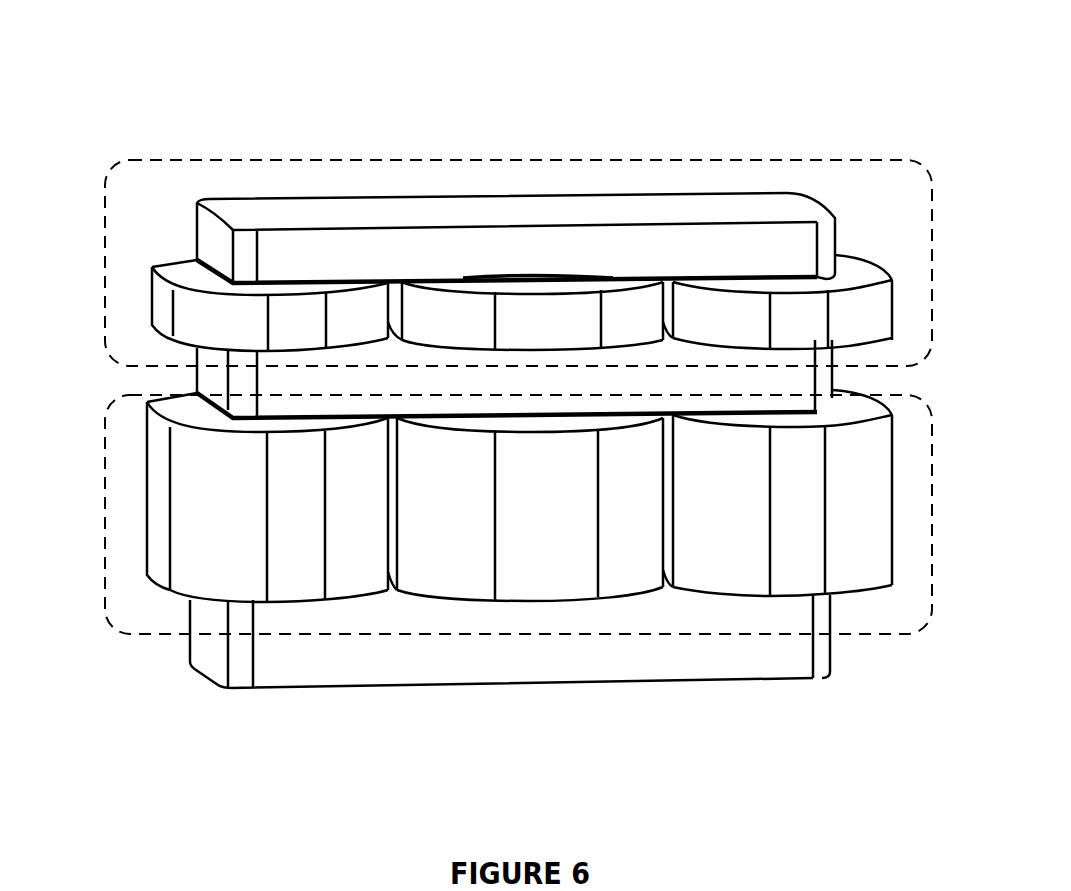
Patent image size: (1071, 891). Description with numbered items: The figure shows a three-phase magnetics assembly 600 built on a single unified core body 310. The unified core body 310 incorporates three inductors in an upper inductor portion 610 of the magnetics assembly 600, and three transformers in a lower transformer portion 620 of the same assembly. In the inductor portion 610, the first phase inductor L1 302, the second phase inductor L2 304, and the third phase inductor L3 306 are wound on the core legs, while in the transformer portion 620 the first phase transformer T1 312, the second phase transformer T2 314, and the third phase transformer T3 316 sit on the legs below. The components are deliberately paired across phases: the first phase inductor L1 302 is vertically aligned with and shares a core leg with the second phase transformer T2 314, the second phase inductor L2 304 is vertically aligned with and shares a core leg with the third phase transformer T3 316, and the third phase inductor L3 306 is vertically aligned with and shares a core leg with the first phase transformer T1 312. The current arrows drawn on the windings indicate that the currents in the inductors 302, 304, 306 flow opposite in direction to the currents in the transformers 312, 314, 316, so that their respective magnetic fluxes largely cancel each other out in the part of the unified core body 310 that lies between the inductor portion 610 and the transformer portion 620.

The three-phase magnetics assembly 600 is at (631, 92).
The inductor portion 610 is at (122, 153).
The transformer portion 620 is at (122, 387).
The unified core body 310 is at (512, 440).
The first phase inductor L1 302 is at (872, 302).
The second phase inductor L2 304 is at (620, 305).
The third phase inductor L3 306 is at (375, 310).
The first phase transformer T1 312 is at (197, 460).
The second phase transformer T2 314 is at (700, 456).
The third phase transformer T3 316 is at (612, 456).